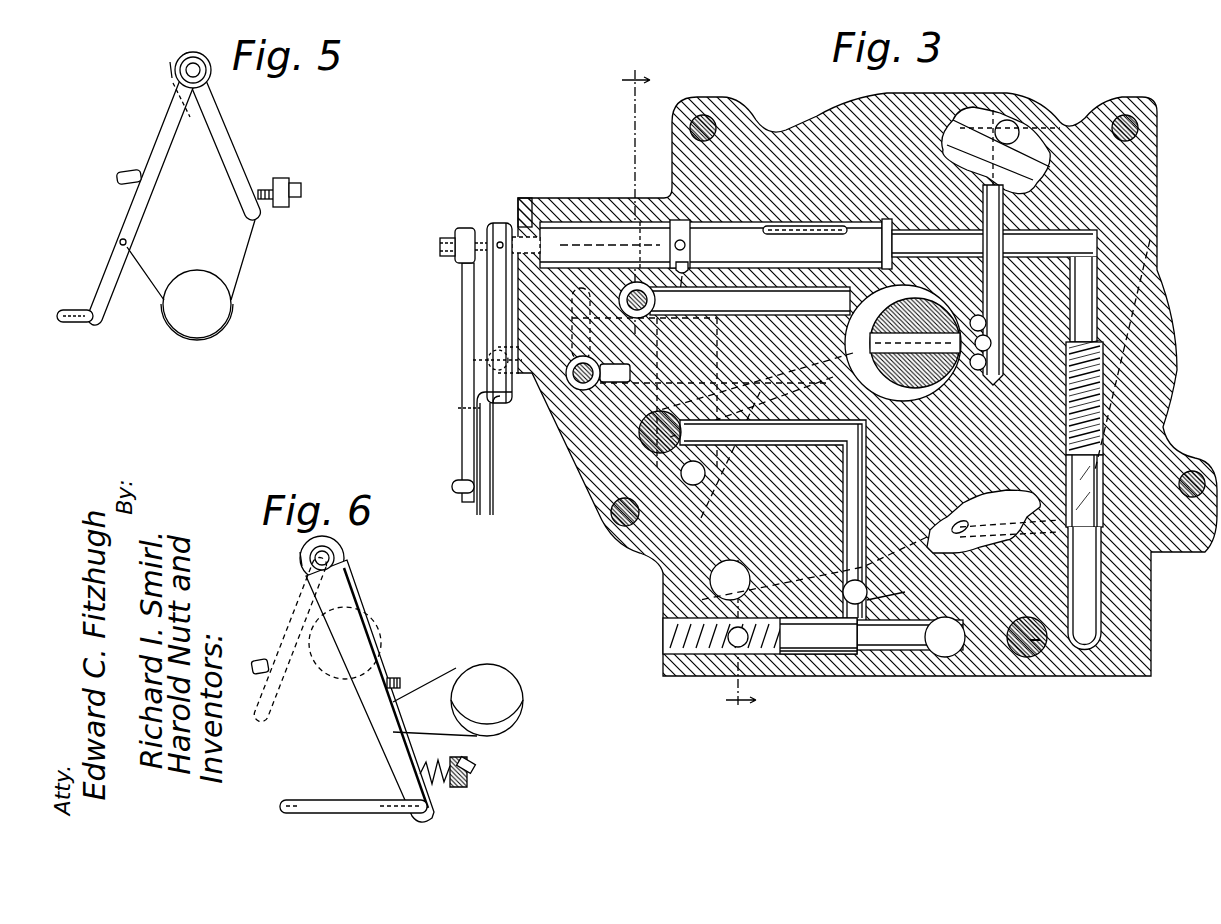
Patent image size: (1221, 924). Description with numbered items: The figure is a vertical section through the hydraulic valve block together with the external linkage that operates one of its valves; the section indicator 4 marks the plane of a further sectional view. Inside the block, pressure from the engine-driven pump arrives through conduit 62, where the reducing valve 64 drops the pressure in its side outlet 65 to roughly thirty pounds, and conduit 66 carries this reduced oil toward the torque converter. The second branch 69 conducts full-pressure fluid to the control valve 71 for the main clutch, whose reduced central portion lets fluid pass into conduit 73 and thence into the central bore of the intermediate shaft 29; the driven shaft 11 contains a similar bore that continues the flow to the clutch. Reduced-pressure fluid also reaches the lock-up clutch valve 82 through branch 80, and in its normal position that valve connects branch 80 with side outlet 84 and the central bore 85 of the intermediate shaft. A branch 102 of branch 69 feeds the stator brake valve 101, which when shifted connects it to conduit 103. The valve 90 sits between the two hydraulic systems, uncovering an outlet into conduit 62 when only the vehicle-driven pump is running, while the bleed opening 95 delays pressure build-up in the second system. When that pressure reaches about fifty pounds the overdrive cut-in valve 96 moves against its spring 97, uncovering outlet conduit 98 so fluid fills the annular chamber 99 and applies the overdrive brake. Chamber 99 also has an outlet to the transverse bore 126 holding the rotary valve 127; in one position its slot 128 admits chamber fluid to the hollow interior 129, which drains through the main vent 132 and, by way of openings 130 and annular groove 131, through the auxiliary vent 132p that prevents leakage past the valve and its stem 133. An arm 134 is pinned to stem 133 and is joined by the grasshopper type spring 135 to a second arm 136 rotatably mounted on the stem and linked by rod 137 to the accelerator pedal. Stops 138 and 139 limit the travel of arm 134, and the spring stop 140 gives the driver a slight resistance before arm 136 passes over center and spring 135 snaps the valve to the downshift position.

In FIG. 3, the driven shaft 11 is at (815, 106).
In FIG. 3, the section line 4 is at (679, 389).
In FIG. 3, the intermediate shaft 29 is at (875, 331).
In FIG. 3, the conduit 62 is at (890, 650).
In FIG. 3, the reducing valve 64 is at (817, 654).
In FIG. 3, the side outlet 65 is at (898, 594).
In FIG. 3, the conduit 66 is at (855, 592).
In FIG. 3, the second branch 69 is at (610, 244).
In FIG. 3, the control valve 71 is at (655, 305).
In FIG. 3, the conduit 73 is at (750, 301).
In FIG. 3, the branch 80 is at (773, 521).
In FIG. 3, the valve 82 is at (650, 440).
In FIG. 3, the side outlet 84 is at (756, 431).
In FIG. 3, the central bore 85 is at (878, 356).
In FIG. 3, the valve 90 is at (1030, 652).
In FIG. 3, the bleed opening 95 is at (1038, 642).
In FIG. 3, the overdrive cut-in valve 96 is at (1090, 484).
In FIG. 3, the spring 97 is at (1100, 358).
In FIG. 3, the outlet conduit 98 is at (1078, 540).
In FIG. 3, the annular chamber 99 is at (880, 545).
In FIG. 3, the valve 101 is at (578, 385).
In FIG. 3, the branch 102 is at (590, 350).
In FIG. 3, the conduit 103 is at (615, 373).
In FIG. 3, the transverse bore 126 is at (572, 222).
In FIG. 3, the valve 127 is at (606, 222).
In FIG. 3, the slot 128 is at (822, 226).
In FIG. 3, the hollow interior 129 is at (872, 222).
In FIG. 3, the openings 130 is at (688, 245).
In FIG. 3, the annular groove 131 is at (668, 196).
In FIG. 3, the main vent 132 is at (1001, 163).
In FIG. 3, the auxiliary vent 132p is at (706, 286).
In FIG. 3, the stem 133 is at (524, 238).
In FIG. 5, the stem 133 is at (186, 70).
In FIG. 6, the stem 133 is at (335, 557).
In FIG. 3, the arm 134 is at (505, 405).
In FIG. 5, the arm 134 is at (232, 118).
In FIG. 6, the arm 134 is at (303, 582).
In FIG. 3, the grasshopper type spring 135 is at (493, 515).
In FIG. 5, the grasshopper type spring 135 is at (232, 312).
In FIG. 6, the grasshopper type spring 135 is at (468, 663).
In FIG. 3, the second arm 136 is at (462, 300).
In FIG. 5, the second arm 136 is at (140, 205).
In FIG. 6, the second arm 136 is at (382, 728).
In FIG. 3, the rod 137 is at (456, 485).
In FIG. 5, the rod 137 is at (75, 300).
In FIG. 6, the rod 137 is at (358, 801).
In FIG. 5, the stop 138 is at (130, 170).
In FIG. 6, the stop 138 is at (262, 658).
In FIG. 3, the stop 139 is at (473, 362).
In FIG. 5, the stop 139 is at (266, 190).
In FIG. 6, the stop 139 is at (396, 678).
In FIG. 6, the spring stop 140 is at (440, 763).